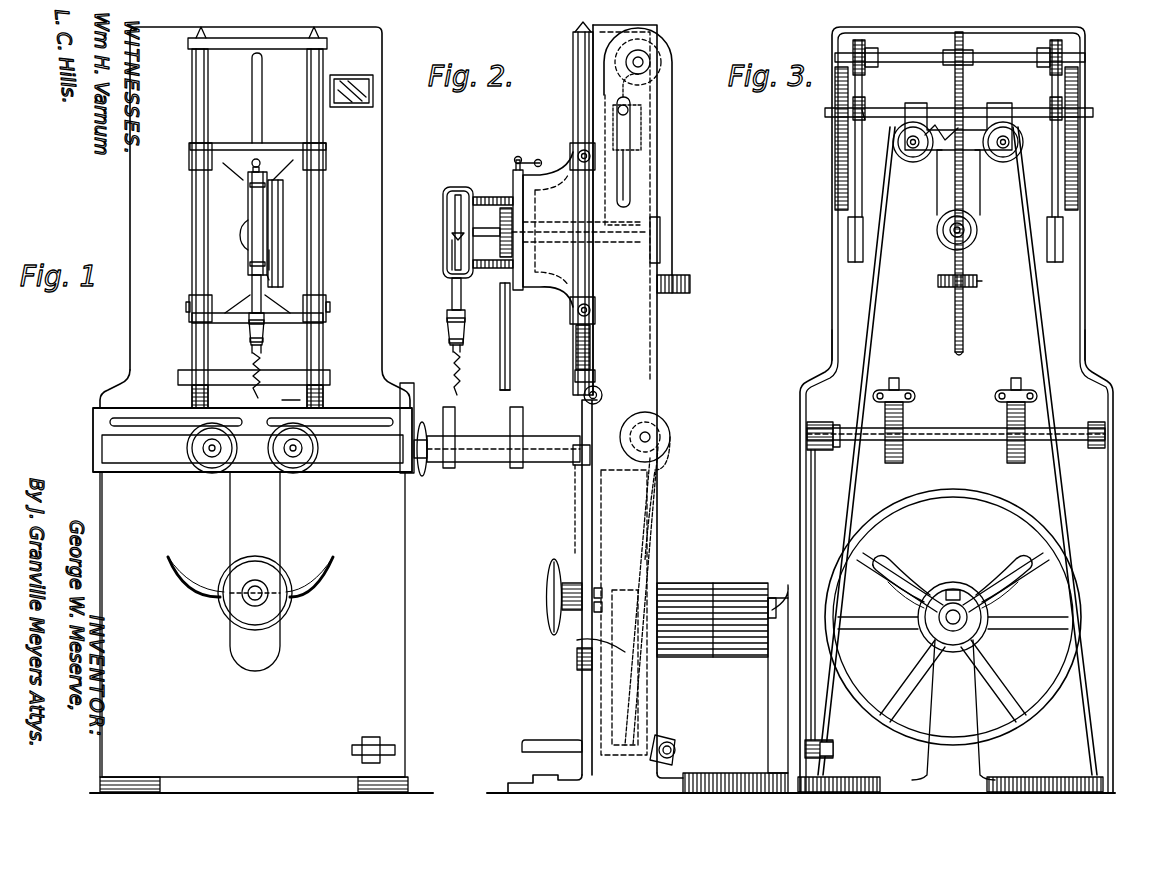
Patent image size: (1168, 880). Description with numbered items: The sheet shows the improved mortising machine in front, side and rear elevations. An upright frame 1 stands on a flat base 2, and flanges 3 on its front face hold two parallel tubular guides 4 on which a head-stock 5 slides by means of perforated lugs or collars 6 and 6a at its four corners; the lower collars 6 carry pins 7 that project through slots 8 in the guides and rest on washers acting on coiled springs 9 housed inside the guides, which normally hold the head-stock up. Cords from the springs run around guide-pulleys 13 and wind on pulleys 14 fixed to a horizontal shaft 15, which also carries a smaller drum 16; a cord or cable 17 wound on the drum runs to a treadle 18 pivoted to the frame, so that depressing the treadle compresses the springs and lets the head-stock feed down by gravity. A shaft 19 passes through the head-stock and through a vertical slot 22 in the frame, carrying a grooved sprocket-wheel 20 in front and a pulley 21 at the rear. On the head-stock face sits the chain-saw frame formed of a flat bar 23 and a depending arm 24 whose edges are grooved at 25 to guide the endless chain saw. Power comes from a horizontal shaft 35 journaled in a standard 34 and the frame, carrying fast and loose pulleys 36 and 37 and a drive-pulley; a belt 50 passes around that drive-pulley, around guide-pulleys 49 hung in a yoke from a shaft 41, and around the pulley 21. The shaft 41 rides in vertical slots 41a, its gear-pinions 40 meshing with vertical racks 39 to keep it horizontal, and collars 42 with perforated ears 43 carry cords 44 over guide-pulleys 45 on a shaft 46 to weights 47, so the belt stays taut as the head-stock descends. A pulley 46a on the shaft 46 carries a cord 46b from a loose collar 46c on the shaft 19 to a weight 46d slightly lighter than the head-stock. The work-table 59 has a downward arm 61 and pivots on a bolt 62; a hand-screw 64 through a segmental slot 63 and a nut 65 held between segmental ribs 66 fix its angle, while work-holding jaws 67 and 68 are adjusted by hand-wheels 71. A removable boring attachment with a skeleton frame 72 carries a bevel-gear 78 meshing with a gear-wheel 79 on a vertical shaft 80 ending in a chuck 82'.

In FIG. 1, the upright frame 1 is at (382, 345).
In FIG. 2, the upright frame 1 is at (650, 365).
In FIG. 3, the upright frame 1 is at (1088, 485).
In FIG. 2, the flat base 2 is at (708, 778).
In FIG. 1, the flanges 3 is at (102, 524).
In FIG. 2, the flanges 3 is at (624, 612).
In FIG. 3, the flanges 3 is at (830, 342).
In FIG. 1, the tubular guides 4 is at (192, 219).
In FIG. 2, the tubular guides 4 is at (576, 115).
In FIG. 1, the head-stock 5 is at (280, 233).
In FIG. 2, the head-stock 5 is at (548, 229).
In FIG. 1, the perforated lugs or collars 6 is at (189, 155).
In FIG. 2, the perforated lugs or collars 6 is at (572, 163).
In FIG. 1, the perforated lugs or collars 6a is at (303, 300).
In FIG. 2, the perforated lugs or collars 6a is at (570, 308).
In FIG. 1, the pins 7 is at (189, 312).
In FIG. 2, the slots 8 is at (578, 340).
In FIG. 1, the coiled springs 9 is at (307, 396).
In FIG. 2, the coiled springs 9 is at (585, 405).
In FIG. 3, the coiled springs 9 is at (905, 412).
In FIG. 1, the guide-pulleys 13 is at (192, 395).
In FIG. 2, the guide-pulleys 13 is at (578, 398).
In FIG. 2, the pulleys 14 is at (672, 440).
In FIG. 3, the pulleys 14 is at (893, 463).
In FIG. 2, the horizontal shaft 15 is at (662, 428).
In FIG. 3, the horizontal shaft 15 is at (962, 432).
In FIG. 3, the drum 16 is at (822, 422).
In FIG. 2, the cord or cable 17 is at (655, 480).
In FIG. 3, the cord or cable 17 is at (811, 498).
In FIG. 1, the treadle 18 is at (352, 748).
In FIG. 2, the treadle 18 is at (555, 742).
In FIG. 3, the treadle 18 is at (833, 748).
In FIG. 2, the shaft 19 is at (625, 240).
In FIG. 3, the shaft 19 is at (977, 235).
In FIG. 1, the grooved sprocket-wheel 20 is at (248, 235).
In FIG. 2, the grooved sprocket-wheel 20 is at (500, 245).
In FIG. 2, the pulley 21 is at (638, 215).
In FIG. 3, the pulley 21 is at (940, 235).
In FIG. 1, the vertical slot 22 is at (257, 92).
In FIG. 3, the vertical slot 22 is at (955, 358).
In FIG. 2, the flat arm or bar 23 is at (513, 178).
In FIG. 2, the depending arm 24 is at (510, 338).
In FIG. 3, the depending arm 24 is at (953, 634).
In FIG. 2, the grooves 25 is at (510, 378).
In FIG. 2, the standard 34 is at (775, 725).
In FIG. 3, the horizontal shaft 35 is at (990, 605).
In FIG. 2, the fast pulley 36 is at (688, 585).
In FIG. 2, the loose pulley 37 is at (732, 657).
In FIG. 3, the vertical racks 39 is at (800, 138).
In FIG. 3, the gear-pinions 40 is at (1093, 110).
In FIG. 2, the shaft 41 is at (633, 105).
In FIG. 3, the shaft 41 is at (908, 110).
In FIG. 2, the vertical slots 41a is at (628, 158).
In FIG. 3, the collars 42 is at (913, 132).
In FIG. 3, the perforated ears 43 is at (945, 62).
In FIG. 3, the cords or cables 44 is at (873, 147).
In FIG. 2, the guide-pulleys 45 is at (645, 80).
In FIG. 3, the guide-pulleys 45 is at (860, 42).
In FIG. 2, the shaft 46 is at (652, 45).
In FIG. 3, the shaft 46 is at (1010, 62).
In FIG. 2, the pulley 46a is at (650, 62).
In FIG. 3, the cord or cable 46b is at (1060, 80).
In FIG. 2, the loose collar 46c is at (688, 302).
In FIG. 3, the weight 46d is at (980, 284).
In FIG. 2, the weights 47 is at (661, 230).
In FIG. 3, the weights 47 is at (848, 240).
In FIG. 3, the guide-pulleys 49 is at (912, 162).
In FIG. 3, the belt 50 is at (870, 360).
In FIG. 1, the flat bed or table 59 is at (253, 624).
In FIG. 1, the downwardly-extending arm 61 is at (255, 571).
In FIG. 2, the bolt 62 is at (573, 462).
In FIG. 1, the segmental slot 63 is at (162, 596).
In FIG. 3, the segmental slot 63 is at (911, 572).
In FIG. 1, the hand-screw 64 is at (240, 603).
In FIG. 2, the hand-screw 64 is at (546, 590).
In FIG. 2, the nut 65 is at (602, 590).
In FIG. 3, the nut 65 is at (935, 625).
In FIG. 2, the segmental ribs or flanges 66 is at (602, 608).
In FIG. 3, the segmental ribs or flanges 66 is at (1006, 572).
In FIG. 1, the work-holding jaw 67 is at (105, 425).
In FIG. 2, the work-holding jaw 67 is at (445, 415).
In FIG. 2, the work-holding jaw 68 is at (510, 412).
In FIG. 1, the hand-wheels 71 is at (208, 472).
In FIG. 2, the hand-wheels 71 is at (423, 476).
In FIG. 1, the rectangular skeleton frame 72 is at (268, 250).
In FIG. 2, the rectangular skeleton frame 72 is at (445, 198).
In FIG. 2, the bevel-gear 78 is at (455, 225).
In FIG. 2, the gear-wheel 79 is at (452, 236).
In FIG. 1, the vertical shaft 80 is at (270, 278).
In FIG. 2, the vertical shaft 80 is at (478, 197).
In FIG. 1, the chuck 82' is at (272, 336).
In FIG. 2, the chuck 82' is at (469, 336).